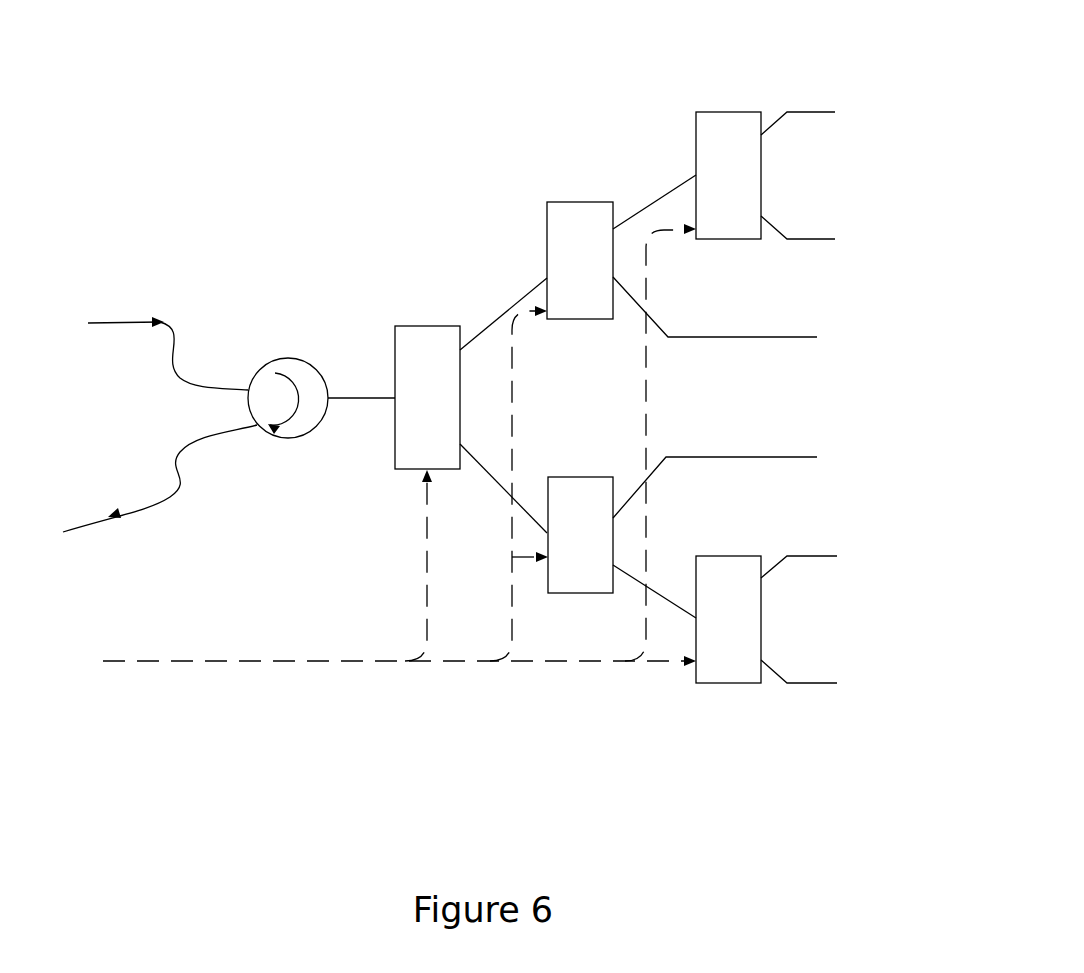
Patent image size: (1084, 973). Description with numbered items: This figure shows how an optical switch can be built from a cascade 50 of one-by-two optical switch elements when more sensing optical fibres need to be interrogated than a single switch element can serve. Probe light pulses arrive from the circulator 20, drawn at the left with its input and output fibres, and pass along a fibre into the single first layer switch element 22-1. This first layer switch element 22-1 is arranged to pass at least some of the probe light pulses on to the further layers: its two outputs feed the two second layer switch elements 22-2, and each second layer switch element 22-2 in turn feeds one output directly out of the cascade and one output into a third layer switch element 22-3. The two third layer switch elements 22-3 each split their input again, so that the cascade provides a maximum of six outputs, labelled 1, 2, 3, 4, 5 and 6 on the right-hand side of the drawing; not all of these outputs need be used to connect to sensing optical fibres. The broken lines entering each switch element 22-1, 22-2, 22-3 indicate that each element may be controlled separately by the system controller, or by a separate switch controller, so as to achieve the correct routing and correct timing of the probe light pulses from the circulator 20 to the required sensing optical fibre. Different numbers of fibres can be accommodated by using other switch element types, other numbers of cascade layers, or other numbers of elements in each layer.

The cascade 50 is at (438, 178).
The circulator 20 is at (288, 358).
The first layer switch element 22-1 is at (410, 472).
The second layer switch elements 22-2 is at (572, 202).
The third layer switch elements 22-3 is at (722, 110).
The output channel 1 is at (808, 116).
The output channel 2 is at (808, 235).
The output channel 3 is at (725, 315).
The output channel 4 is at (728, 482).
The output channel 5 is at (810, 563).
The output channel 6 is at (810, 680).